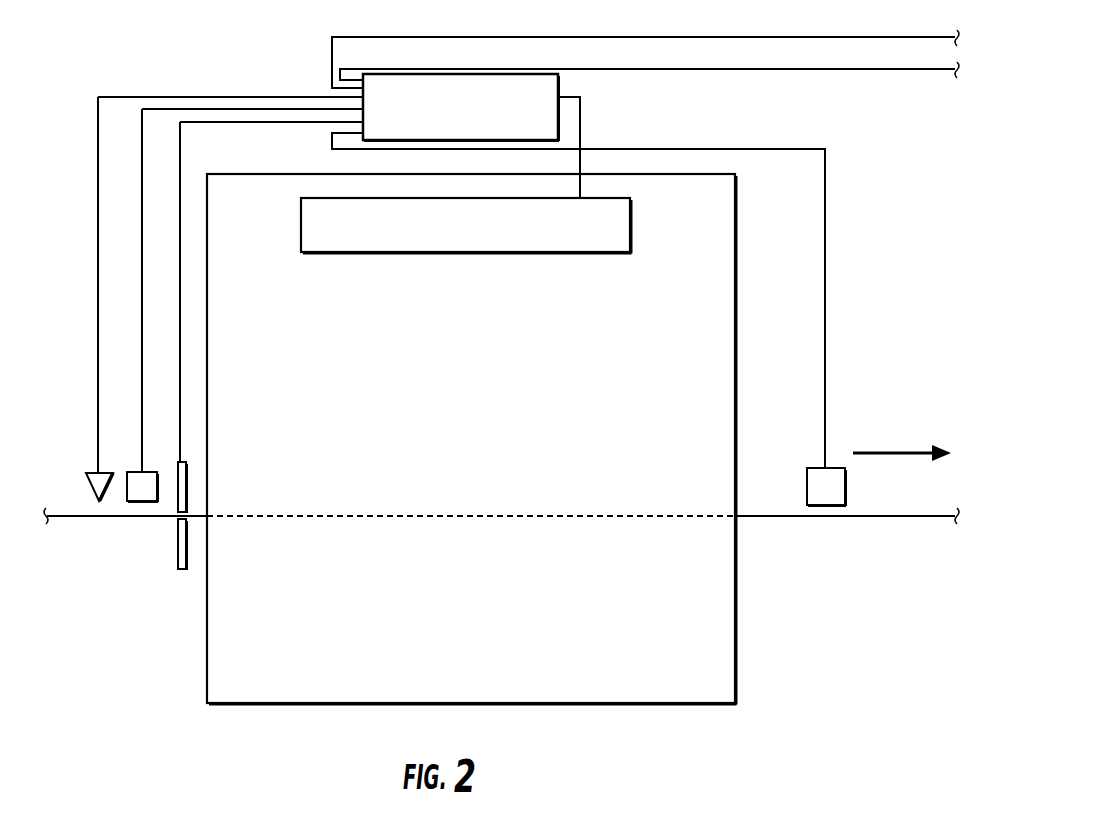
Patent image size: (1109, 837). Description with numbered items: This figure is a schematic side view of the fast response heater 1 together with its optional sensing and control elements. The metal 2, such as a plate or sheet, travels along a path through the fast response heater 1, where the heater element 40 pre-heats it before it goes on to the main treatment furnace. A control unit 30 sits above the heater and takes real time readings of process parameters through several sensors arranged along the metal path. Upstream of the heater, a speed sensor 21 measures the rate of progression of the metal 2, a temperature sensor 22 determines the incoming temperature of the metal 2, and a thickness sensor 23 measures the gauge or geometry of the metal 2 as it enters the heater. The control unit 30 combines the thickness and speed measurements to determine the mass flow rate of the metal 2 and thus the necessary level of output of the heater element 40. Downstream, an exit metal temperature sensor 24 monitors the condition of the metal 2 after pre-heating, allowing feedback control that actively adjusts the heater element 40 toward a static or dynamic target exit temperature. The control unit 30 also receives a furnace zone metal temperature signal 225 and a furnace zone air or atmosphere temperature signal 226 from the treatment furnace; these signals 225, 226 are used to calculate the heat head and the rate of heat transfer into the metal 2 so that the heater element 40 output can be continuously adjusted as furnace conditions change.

The fast response heater 1 is at (277, 172).
The metal 2 is at (100, 518).
The speed sensor 21 is at (87, 477).
The temperature sensor 22 is at (128, 477).
The thickness sensor 23 is at (178, 470).
The exit metal temperature sensor 24 is at (815, 468).
The control unit 30 is at (558, 88).
The heater element 40 is at (560, 252).
The furnace zone metal temperature signal 225 is at (858, 37).
The furnace zone air/atmosphere temperature signal 226 is at (860, 69).